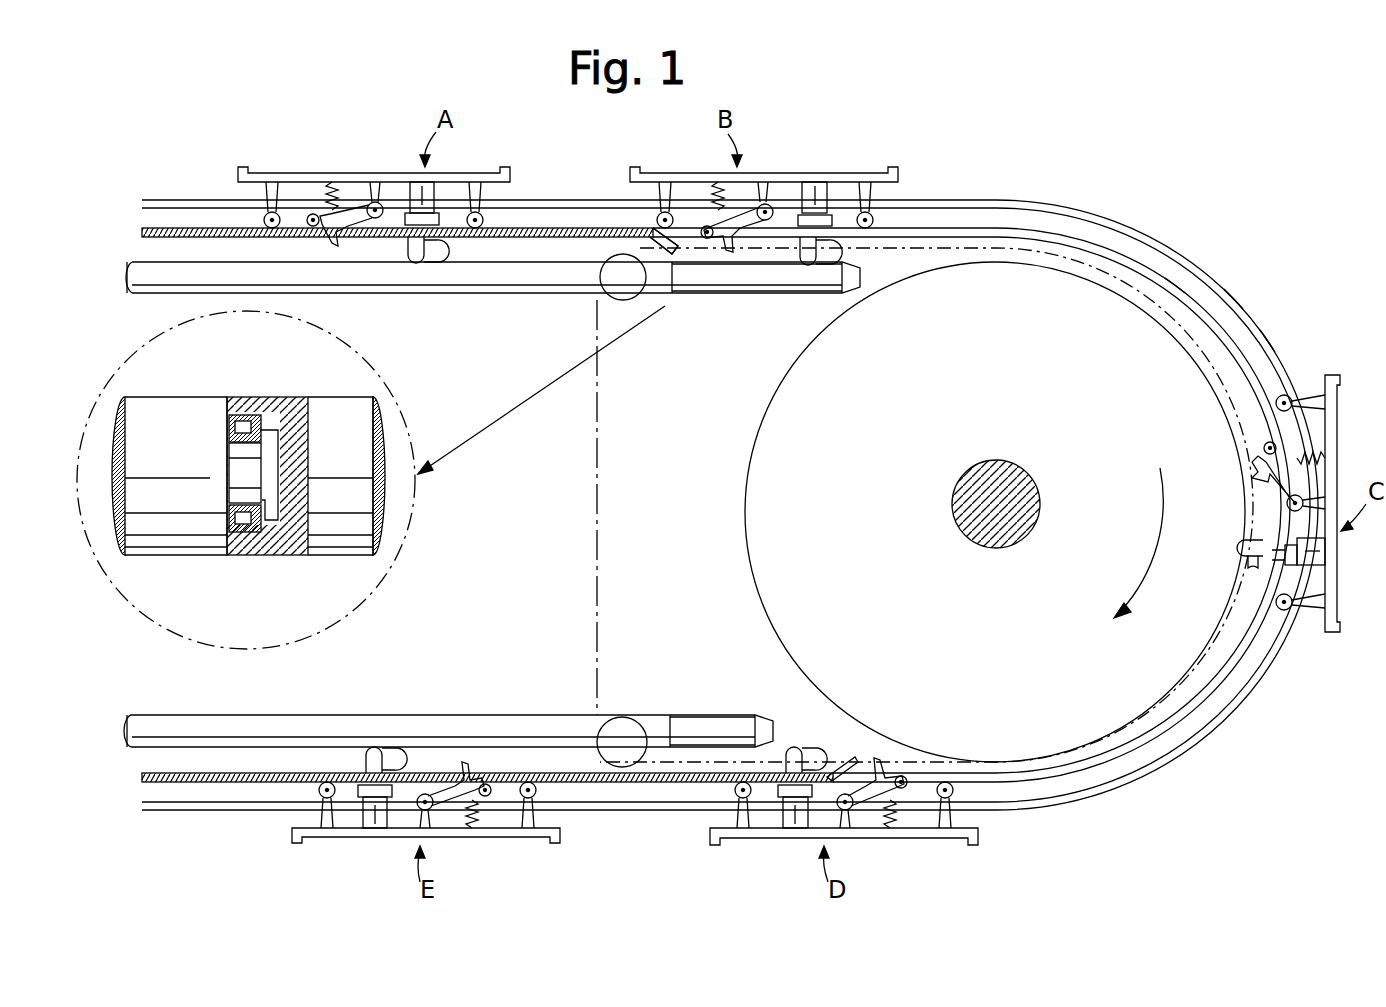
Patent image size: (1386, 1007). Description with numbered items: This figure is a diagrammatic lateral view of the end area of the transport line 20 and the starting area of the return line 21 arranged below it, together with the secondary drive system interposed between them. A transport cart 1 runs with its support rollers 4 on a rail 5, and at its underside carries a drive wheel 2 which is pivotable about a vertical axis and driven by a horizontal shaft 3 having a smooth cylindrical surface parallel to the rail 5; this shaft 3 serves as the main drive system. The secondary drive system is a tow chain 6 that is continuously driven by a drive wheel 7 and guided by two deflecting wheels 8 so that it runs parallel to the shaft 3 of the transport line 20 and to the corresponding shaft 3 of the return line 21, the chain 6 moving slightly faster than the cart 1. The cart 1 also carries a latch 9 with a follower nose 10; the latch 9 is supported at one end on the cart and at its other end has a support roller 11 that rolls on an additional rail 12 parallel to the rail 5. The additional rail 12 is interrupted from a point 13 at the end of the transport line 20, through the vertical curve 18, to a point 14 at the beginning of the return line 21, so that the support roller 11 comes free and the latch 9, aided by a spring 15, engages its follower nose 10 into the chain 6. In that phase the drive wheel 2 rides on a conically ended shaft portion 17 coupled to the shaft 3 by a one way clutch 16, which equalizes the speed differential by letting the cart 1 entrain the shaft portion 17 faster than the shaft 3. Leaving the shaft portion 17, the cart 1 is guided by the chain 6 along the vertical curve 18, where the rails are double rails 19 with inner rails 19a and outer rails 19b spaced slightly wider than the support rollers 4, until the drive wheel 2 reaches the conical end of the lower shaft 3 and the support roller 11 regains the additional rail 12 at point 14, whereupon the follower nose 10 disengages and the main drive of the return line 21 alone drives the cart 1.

The transport cart 1 is at (478, 181).
The drive wheel 2 is at (418, 264).
The shaft 3 is at (497, 283).
The support rollers 4 is at (266, 214).
The rail 5 is at (787, 233).
The tow chain 6 is at (599, 456).
The drive wheel 7 is at (757, 563).
The deflecting wheels 8 is at (603, 290).
The latch 9 is at (373, 203).
The follower nose 10 is at (340, 247).
The support roller 11 is at (304, 214).
The additional rail 12 is at (172, 228).
The point 13 is at (673, 246).
The point 14 is at (858, 765).
The spring 15 is at (334, 205).
The one way clutch 16 is at (247, 527).
The shaft portion 17 is at (797, 285).
The vertical curve 18 is at (1278, 340).
The double rails 19 is at (1130, 245).
The inner rails 19a is at (1180, 288).
The outer rails 19b is at (1240, 300).
The transport line 20 is at (144, 299).
The return line 21 is at (133, 710).